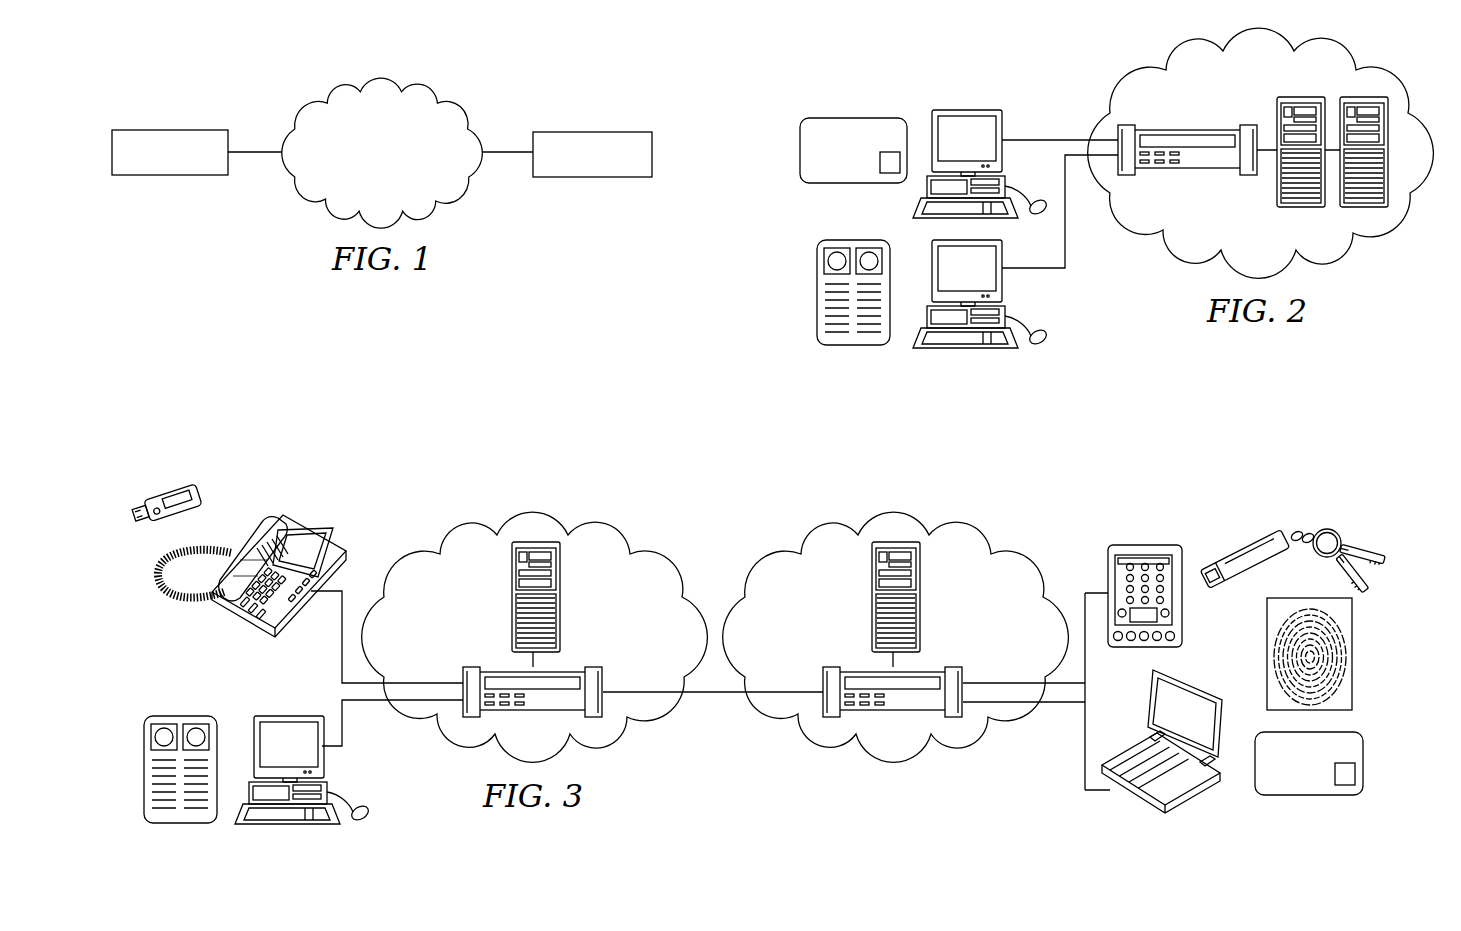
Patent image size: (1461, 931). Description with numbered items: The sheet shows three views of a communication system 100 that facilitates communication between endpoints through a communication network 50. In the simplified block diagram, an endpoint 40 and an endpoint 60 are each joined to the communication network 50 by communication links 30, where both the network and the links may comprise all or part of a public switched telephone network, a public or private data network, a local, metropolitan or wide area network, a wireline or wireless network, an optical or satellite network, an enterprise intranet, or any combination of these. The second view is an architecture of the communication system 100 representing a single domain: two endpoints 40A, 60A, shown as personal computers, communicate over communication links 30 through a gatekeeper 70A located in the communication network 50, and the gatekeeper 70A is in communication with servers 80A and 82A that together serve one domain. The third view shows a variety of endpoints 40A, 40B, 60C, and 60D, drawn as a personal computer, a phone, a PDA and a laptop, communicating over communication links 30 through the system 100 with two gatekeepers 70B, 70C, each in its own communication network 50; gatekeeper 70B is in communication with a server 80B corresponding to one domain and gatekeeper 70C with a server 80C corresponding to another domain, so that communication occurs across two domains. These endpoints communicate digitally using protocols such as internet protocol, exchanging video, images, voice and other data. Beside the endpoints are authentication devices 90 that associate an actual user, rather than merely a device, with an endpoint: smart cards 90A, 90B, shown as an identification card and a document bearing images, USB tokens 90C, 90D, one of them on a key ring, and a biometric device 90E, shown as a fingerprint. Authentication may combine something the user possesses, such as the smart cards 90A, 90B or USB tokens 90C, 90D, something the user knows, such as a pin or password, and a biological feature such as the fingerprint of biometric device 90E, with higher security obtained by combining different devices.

In FIG. 1, the communication system 100 is at (300, 76).
In FIG. 2, the communication system 100 is at (1074, 52).
In FIG. 3, the communication system 100 is at (626, 488).
In FIG. 1, the communication links 30 is at (267, 150).
In FIG. 2, the communication links 30 is at (1048, 138).
In FIG. 3, the communication links 30 is at (342, 650).
In FIG. 1, the endpoint 40 is at (168, 130).
In FIG. 1, the communication network 50 is at (425, 87).
In FIG. 2, the communication network 50 is at (1393, 74).
In FIG. 3, the communication network 50 is at (463, 523).
In FIG. 1, the endpoint 60 is at (593, 132).
In FIG. 2, the endpoint 40A is at (967, 110).
In FIG. 3, the endpoint 40A is at (285, 825).
In FIG. 3, the endpoint 40B is at (313, 528).
In FIG. 2, the endpoint 60A is at (967, 348).
In FIG. 3, the endpoint 60C is at (1145, 545).
In FIG. 3, the endpoint 60D is at (1185, 790).
In FIG. 2, the gatekeeper 70A is at (1188, 130).
In FIG. 3, the gatekeeper 70B is at (570, 667).
In FIG. 3, the gatekeeper 70C is at (930, 667).
In FIG. 2, the server 80A is at (1273, 182).
In FIG. 3, the server 80B is at (510, 598).
In FIG. 3, the server 80C is at (870, 598).
In FIG. 2, the server 82A is at (1362, 208).
In FIG. 2, the authentication devices 90 is at (774, 153).
In FIG. 3, the authentication devices 90 is at (143, 482).
In FIG. 2, the smart card 90A is at (853, 118).
In FIG. 3, the smart card 90A is at (1308, 795).
In FIG. 2, the smart card 90B is at (853, 346).
In FIG. 3, the smart card 90B is at (179, 825).
In FIG. 3, the USB token 90C is at (181, 489).
In FIG. 3, the USB token 90D is at (1237, 545).
In FIG. 3, the biometric device 90E is at (1265, 653).